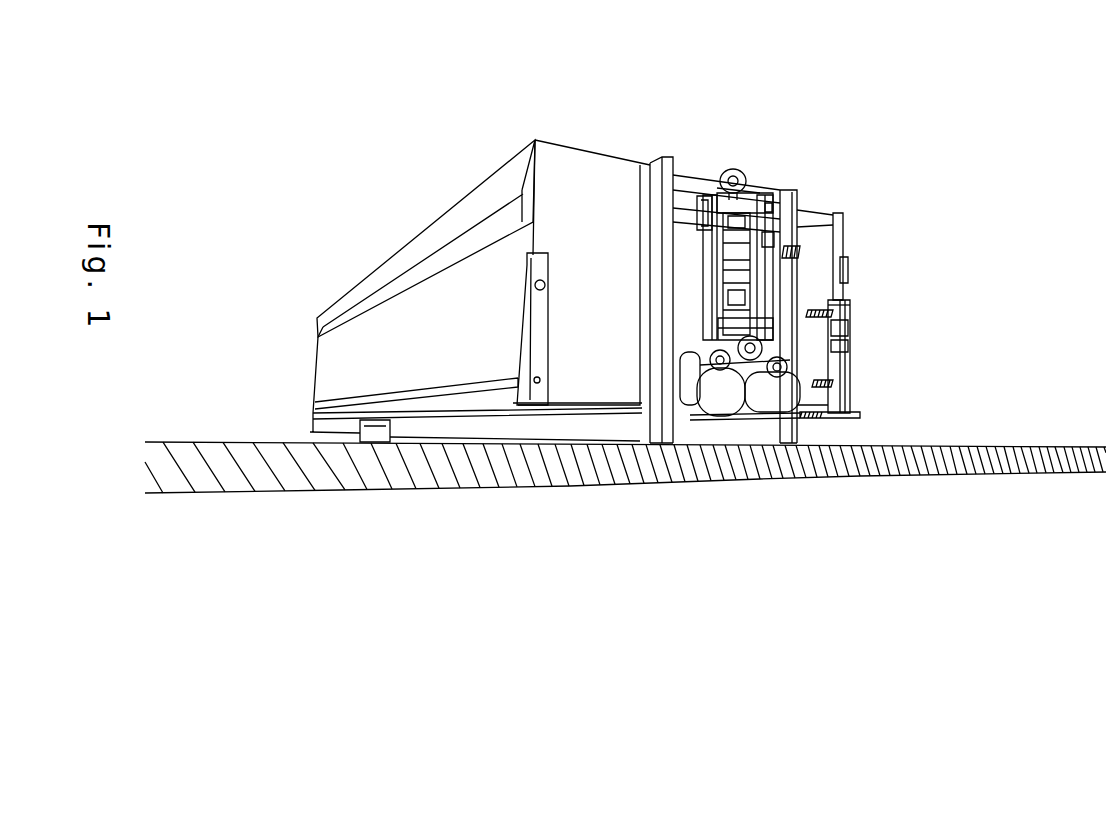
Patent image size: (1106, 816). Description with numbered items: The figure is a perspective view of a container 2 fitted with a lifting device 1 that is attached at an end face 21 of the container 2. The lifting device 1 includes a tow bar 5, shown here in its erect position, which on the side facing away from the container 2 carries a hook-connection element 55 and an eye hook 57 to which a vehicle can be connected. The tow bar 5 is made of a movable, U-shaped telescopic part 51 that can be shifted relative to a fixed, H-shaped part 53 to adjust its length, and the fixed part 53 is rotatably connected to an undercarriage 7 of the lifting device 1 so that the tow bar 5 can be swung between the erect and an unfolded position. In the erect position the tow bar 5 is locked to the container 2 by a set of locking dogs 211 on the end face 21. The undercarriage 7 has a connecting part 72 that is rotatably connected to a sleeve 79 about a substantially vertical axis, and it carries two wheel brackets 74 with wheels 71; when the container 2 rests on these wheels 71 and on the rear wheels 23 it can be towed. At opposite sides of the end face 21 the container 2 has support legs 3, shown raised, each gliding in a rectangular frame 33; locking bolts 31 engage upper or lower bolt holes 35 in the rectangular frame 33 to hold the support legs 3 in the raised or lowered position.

The lifting device 1 is at (843, 313).
The container 2 is at (443, 253).
The end face 21 is at (595, 267).
The locking dogs 211 is at (706, 222).
The rear wheels 23 is at (312, 440).
The support legs 3 is at (846, 303).
The locking bolts 31 is at (843, 328).
The rectangular frame 33 is at (843, 345).
The bolt holes 35 is at (847, 400).
The tow bar 5 is at (773, 260).
The telescopic part 51 is at (765, 222).
The fixed part 53 is at (785, 300).
The hook-connection element 55 is at (760, 203).
The eye hook 57 is at (736, 169).
The undercarriage 7 is at (807, 383).
The wheels 71 is at (703, 400).
The connecting part 72 is at (755, 346).
The wheel brackets 74 is at (688, 395).
The sleeve 79 is at (770, 293).